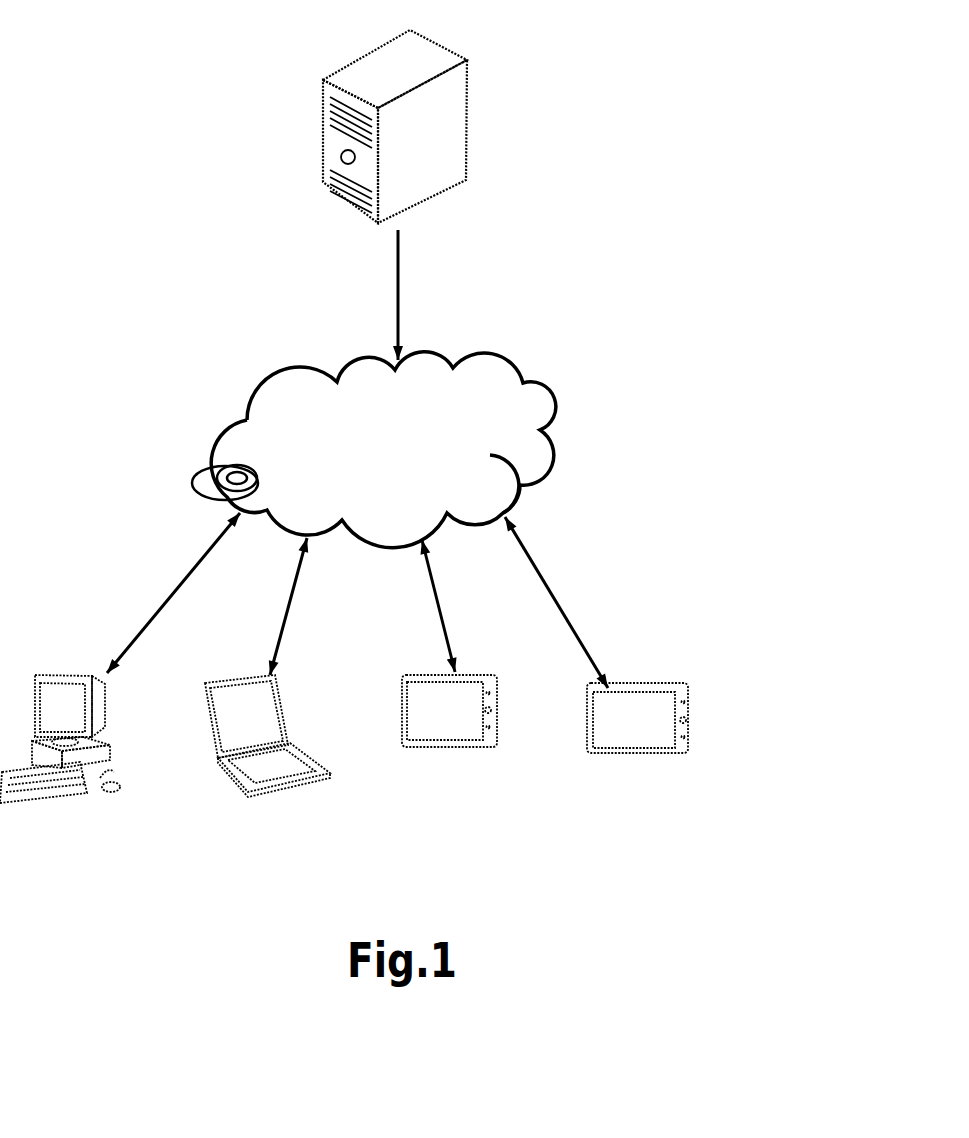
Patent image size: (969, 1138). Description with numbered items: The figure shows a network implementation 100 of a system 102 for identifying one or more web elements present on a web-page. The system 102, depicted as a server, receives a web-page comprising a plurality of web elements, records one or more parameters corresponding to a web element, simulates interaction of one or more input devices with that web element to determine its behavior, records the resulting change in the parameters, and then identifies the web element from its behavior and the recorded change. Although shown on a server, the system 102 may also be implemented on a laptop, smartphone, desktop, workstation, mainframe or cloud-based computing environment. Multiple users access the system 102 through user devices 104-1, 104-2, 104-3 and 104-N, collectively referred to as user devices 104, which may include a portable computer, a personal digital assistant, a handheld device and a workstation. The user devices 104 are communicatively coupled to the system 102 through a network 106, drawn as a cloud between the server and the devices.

The network implementation 100 is at (133, 132).
The system 102 is at (485, 152).
The user devices 104 is at (348, 701).
The user device 104-1 is at (57, 810).
The user device 104-2 is at (333, 787).
The user device 104-3 is at (458, 758).
The user device 104-N is at (650, 767).
The network 106 is at (392, 461).